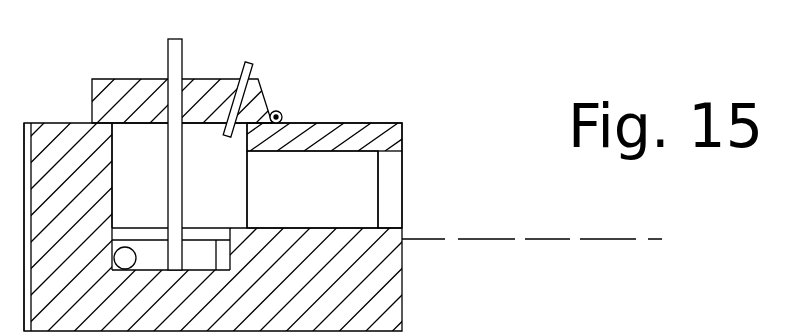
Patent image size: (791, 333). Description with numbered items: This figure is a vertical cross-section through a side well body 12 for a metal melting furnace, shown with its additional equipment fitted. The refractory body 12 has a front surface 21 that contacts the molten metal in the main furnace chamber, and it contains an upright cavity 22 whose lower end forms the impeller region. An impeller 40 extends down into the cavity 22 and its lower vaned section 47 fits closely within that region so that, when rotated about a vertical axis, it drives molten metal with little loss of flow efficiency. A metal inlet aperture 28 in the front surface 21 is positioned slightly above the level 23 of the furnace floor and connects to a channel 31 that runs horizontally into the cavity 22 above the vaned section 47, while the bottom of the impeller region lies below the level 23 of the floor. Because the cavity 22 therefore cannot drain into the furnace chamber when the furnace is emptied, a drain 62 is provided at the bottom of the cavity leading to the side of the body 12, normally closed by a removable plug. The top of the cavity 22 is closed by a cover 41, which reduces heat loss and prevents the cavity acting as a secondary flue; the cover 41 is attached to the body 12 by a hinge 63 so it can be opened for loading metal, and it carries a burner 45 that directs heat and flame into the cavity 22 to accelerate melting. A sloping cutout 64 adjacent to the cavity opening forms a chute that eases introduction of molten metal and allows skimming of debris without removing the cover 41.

The body 12 is at (387, 105).
The front surface 21 is at (402, 133).
The cavity 22 is at (155, 168).
The level of the furnace floor 23 is at (535, 240).
The metal inlet aperture 28 is at (402, 200).
The channel 31 is at (307, 208).
The impeller 40 is at (170, 52).
The cover 41 is at (218, 78).
The burner 45 is at (252, 66).
The vaned section 47 is at (202, 228).
The drain 62 is at (125, 258).
The hinge 63 is at (283, 112).
The sloping cutout 64 is at (110, 155).